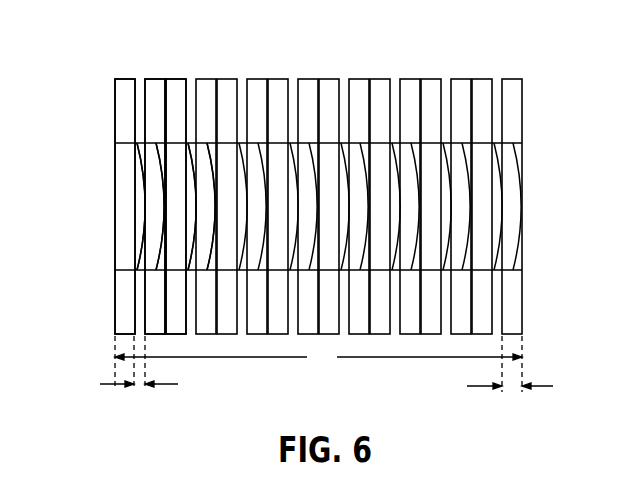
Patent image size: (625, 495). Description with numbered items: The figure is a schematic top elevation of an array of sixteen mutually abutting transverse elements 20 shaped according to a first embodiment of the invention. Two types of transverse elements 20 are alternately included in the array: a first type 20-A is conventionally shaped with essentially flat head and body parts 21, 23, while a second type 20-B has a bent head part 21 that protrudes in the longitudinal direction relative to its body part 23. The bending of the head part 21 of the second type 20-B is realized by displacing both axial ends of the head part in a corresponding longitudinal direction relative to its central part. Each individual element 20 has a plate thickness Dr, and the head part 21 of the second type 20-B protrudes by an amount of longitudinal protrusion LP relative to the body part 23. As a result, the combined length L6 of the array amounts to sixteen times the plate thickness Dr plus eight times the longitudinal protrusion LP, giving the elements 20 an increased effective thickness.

The transverse element 20 is at (405, 58).
The first type of transverse element 20-A is at (122, 72).
The second type of transverse element 20-B is at (159, 70).
The head part 21 is at (205, 170).
The body part 23 is at (207, 93).
The length of the array L6 is at (318, 364).
The amount of longitudinal protrusion LP is at (149, 365).
The plate thickness Dr is at (522, 387).